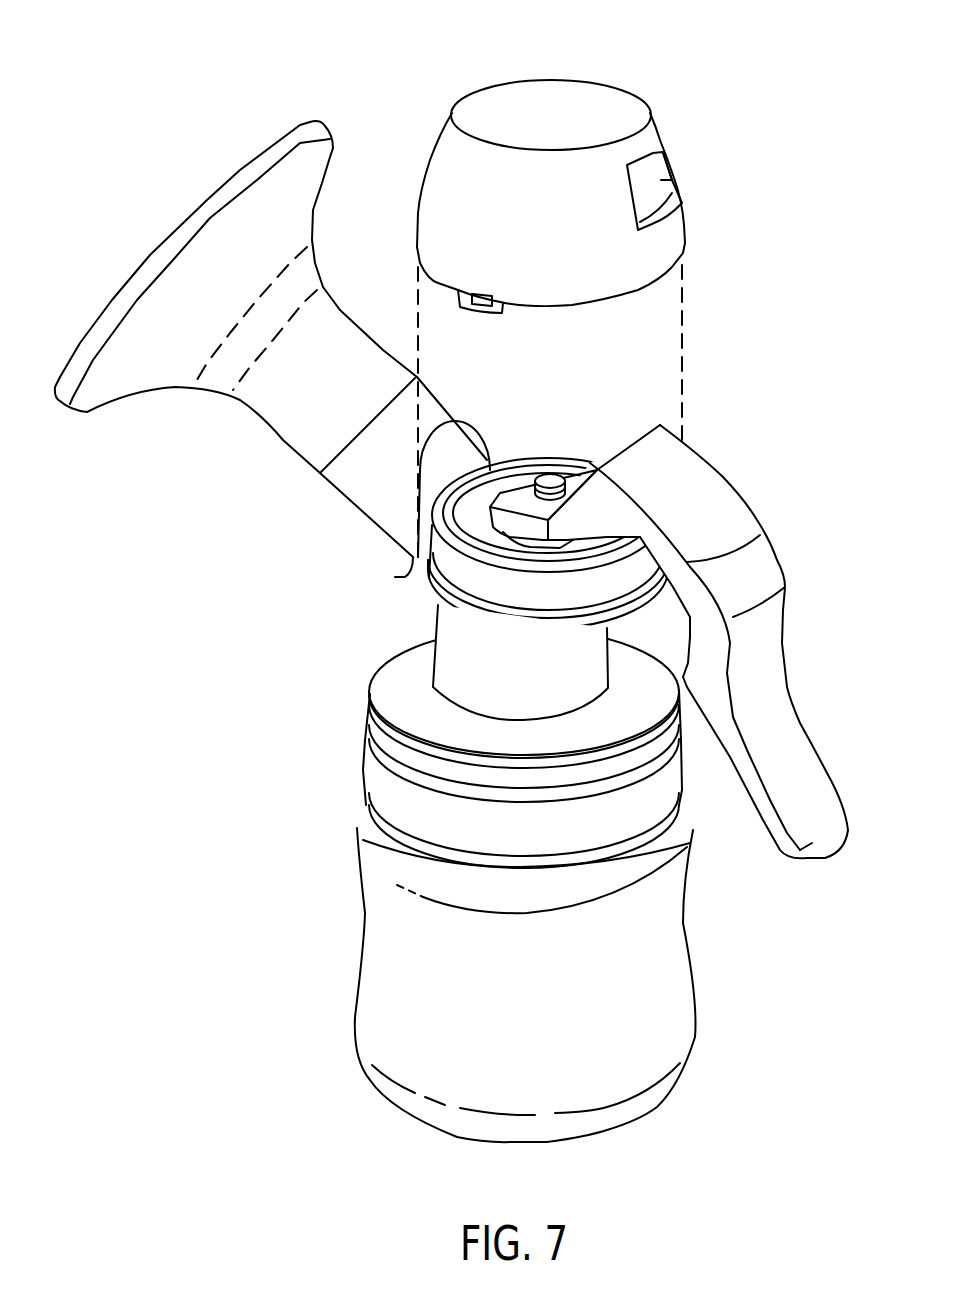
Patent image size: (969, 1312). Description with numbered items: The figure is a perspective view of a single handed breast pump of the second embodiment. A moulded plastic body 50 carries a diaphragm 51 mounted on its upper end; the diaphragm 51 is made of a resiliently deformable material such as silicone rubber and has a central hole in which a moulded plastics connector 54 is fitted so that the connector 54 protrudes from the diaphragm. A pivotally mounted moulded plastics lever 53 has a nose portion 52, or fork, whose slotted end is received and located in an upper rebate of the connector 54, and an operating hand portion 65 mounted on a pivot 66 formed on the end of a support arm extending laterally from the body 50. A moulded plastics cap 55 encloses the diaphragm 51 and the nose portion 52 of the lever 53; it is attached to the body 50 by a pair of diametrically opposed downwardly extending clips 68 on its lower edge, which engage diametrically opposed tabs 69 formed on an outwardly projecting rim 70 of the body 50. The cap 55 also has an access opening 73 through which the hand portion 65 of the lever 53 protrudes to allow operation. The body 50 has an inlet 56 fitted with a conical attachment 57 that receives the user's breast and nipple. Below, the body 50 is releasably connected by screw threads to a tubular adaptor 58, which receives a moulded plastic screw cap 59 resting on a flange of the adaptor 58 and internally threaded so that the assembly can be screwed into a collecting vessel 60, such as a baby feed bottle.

The moulded plastic body 50 is at (466, 556).
The diaphragm 51 is at (500, 460).
The nose portion 52 is at (628, 450).
The lever 53 is at (754, 682).
The connector 54 is at (551, 478).
The cap 55 is at (527, 95).
The inlet 56 is at (415, 376).
The conical attachment 57 is at (230, 177).
The adaptor 58 is at (450, 673).
The screw cap 59 is at (383, 782).
The collecting vessel 60 is at (387, 1038).
The operating hand portion 65 is at (800, 853).
The pivot 66 is at (760, 535).
The clip 68 is at (507, 307).
The tabs 69 is at (437, 625).
The outwardly projecting rim 70 is at (587, 617).
The access opening 73 is at (660, 190).